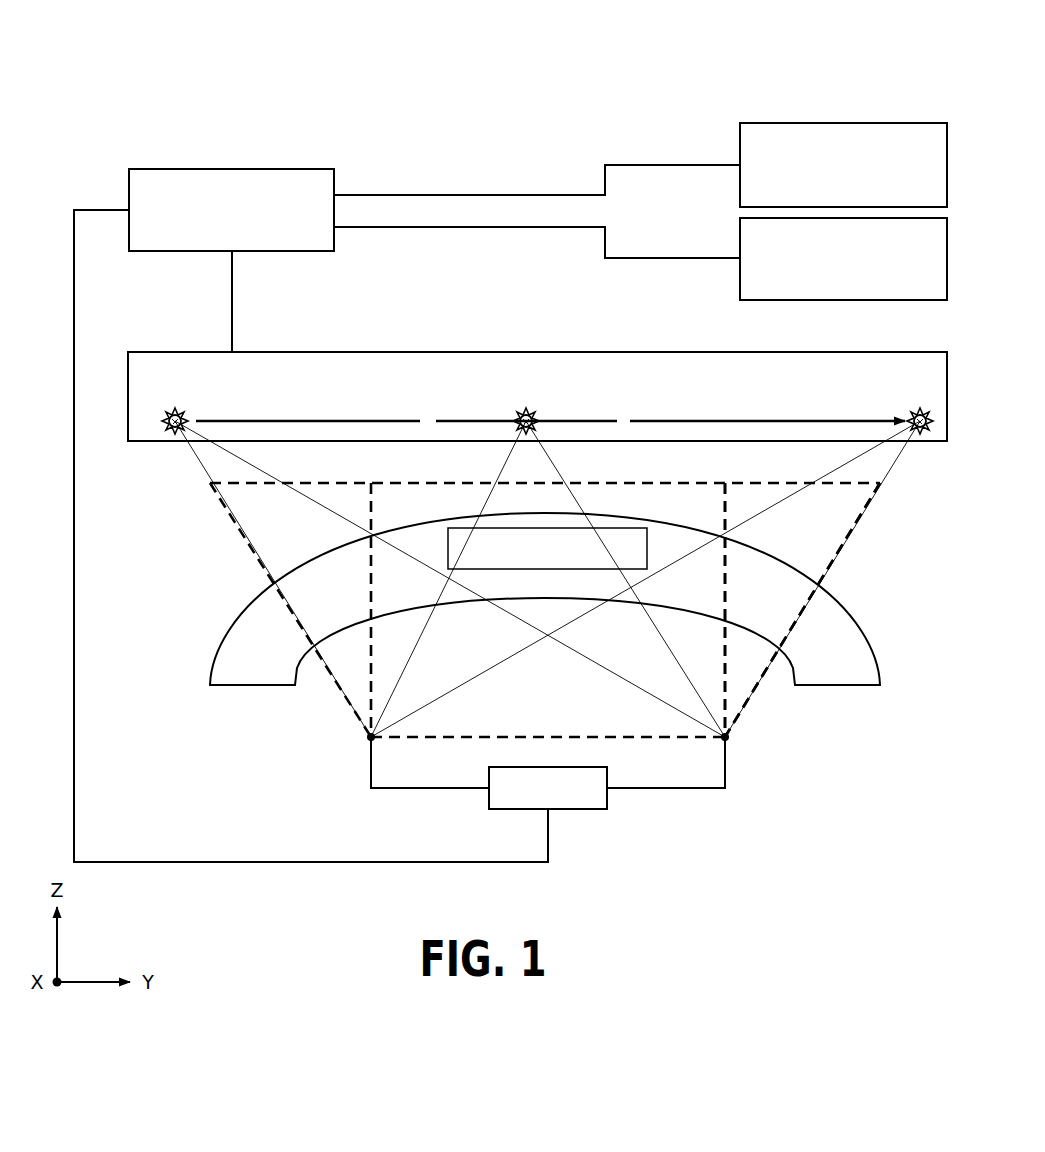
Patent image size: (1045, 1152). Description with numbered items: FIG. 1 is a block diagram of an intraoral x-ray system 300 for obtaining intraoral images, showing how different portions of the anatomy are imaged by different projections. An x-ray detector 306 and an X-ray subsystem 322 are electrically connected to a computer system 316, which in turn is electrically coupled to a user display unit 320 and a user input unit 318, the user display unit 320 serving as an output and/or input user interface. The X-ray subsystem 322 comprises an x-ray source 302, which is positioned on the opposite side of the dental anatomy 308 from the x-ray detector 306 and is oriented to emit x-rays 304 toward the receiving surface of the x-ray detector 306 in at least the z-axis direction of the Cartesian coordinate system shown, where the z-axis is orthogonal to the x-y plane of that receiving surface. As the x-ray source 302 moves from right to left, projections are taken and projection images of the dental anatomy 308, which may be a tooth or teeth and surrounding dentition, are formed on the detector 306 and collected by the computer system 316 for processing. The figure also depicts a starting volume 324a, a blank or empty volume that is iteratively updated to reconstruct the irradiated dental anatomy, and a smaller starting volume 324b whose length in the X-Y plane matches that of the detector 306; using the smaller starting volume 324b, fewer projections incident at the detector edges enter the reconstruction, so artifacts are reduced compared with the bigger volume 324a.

The intraoral x-ray system 300 is at (276, 60).
The x-ray source 302 is at (172, 437).
The x-rays 304 is at (205, 484).
The x-ray detector 306 is at (418, 786).
The dental anatomy 308 is at (836, 672).
The computer system 316 is at (434, 258).
The user input unit 318 is at (843, 165).
The user display unit 320 is at (843, 259).
The X-ray subsystem 322 is at (428, 349).
The starting volume 324a is at (847, 554).
The smaller starting volume 324b is at (729, 510).